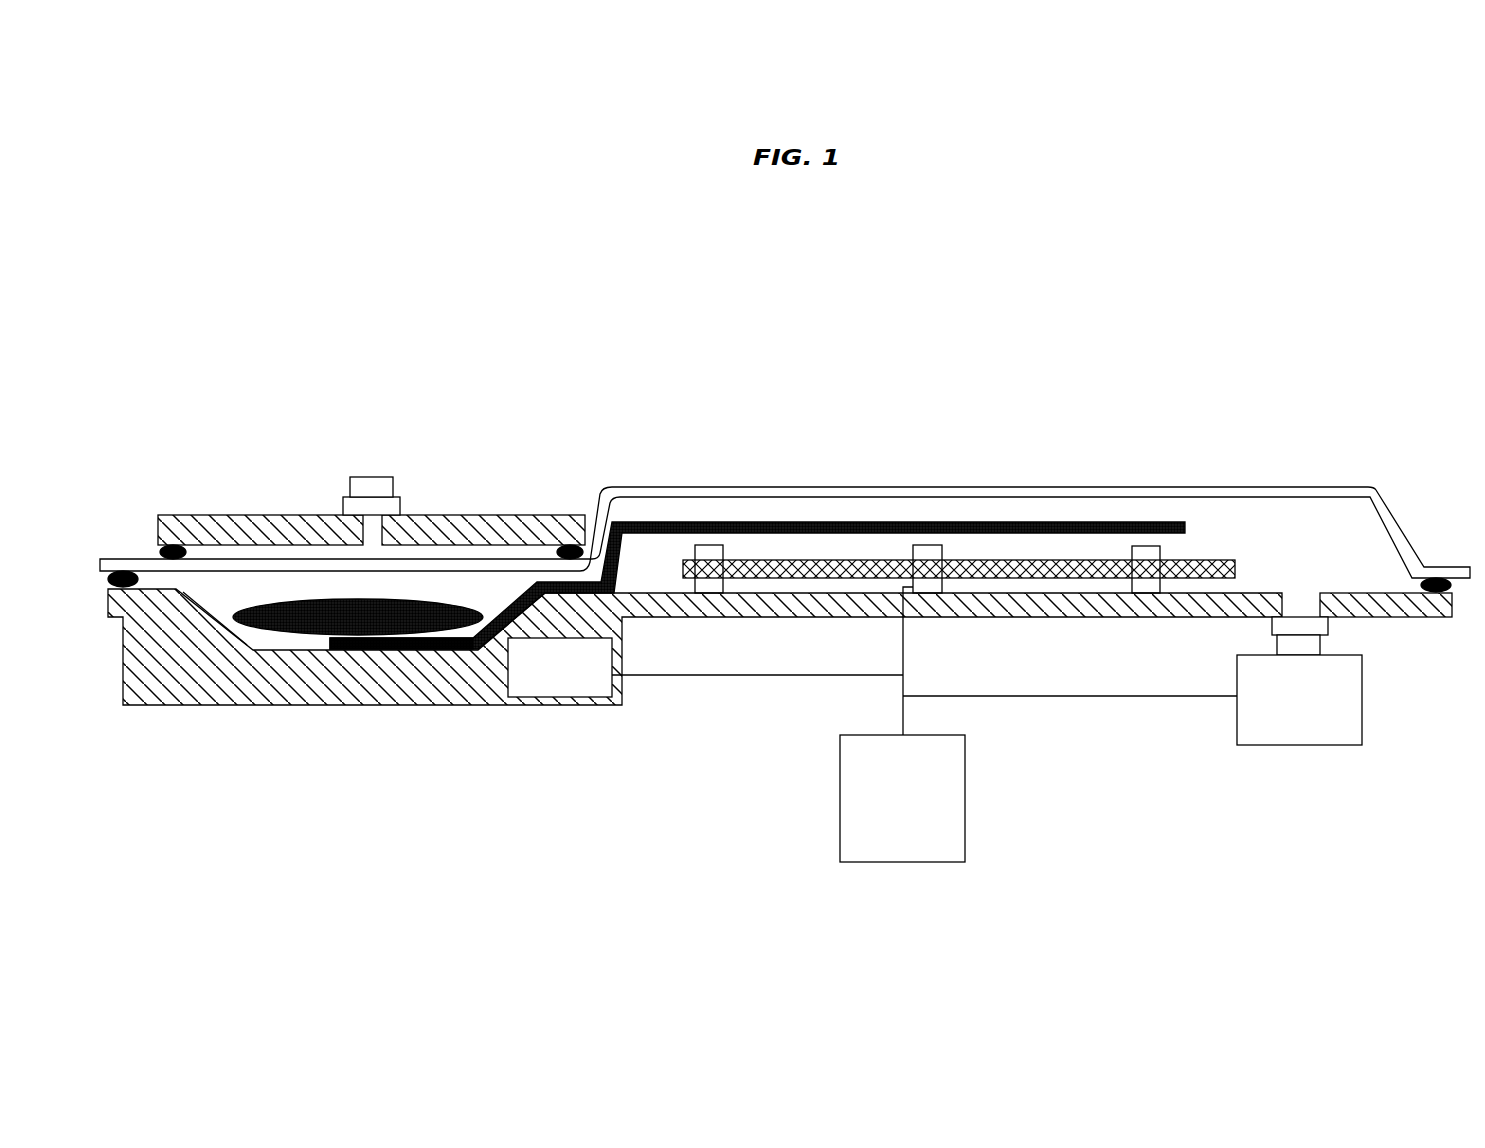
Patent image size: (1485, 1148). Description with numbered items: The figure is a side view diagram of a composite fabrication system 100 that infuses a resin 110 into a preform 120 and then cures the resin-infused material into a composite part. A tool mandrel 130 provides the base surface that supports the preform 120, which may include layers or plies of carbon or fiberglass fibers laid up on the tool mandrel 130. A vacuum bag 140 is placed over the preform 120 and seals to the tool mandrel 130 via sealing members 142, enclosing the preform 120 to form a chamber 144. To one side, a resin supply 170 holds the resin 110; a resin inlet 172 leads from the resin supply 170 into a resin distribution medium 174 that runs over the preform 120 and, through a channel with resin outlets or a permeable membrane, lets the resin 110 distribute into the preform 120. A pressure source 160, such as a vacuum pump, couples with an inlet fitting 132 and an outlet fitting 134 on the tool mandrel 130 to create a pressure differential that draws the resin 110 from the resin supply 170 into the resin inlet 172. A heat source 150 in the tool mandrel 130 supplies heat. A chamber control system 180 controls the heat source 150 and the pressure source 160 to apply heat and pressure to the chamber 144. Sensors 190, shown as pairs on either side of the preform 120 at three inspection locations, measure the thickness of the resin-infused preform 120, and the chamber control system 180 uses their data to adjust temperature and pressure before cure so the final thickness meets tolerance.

The composite fabrication system 100 is at (785, 538).
The resin 110 is at (310, 613).
The preform 120 is at (1235, 570).
The tool mandrel 130 is at (640, 605).
The inlet fitting 132 is at (355, 485).
The outlet fitting 134 is at (1330, 627).
The vacuum bag 140 is at (682, 487).
The sealing members 142 is at (158, 550).
The chamber 144 is at (868, 507).
The heat source 150 is at (604, 690).
The pressure source 160 is at (1318, 737).
The resin supply 170 is at (383, 598).
The resin inlet 172 is at (330, 643).
The resin distribution medium 174 is at (1062, 522).
The chamber control system 180 is at (921, 848).
The sensors 190 is at (695, 548).